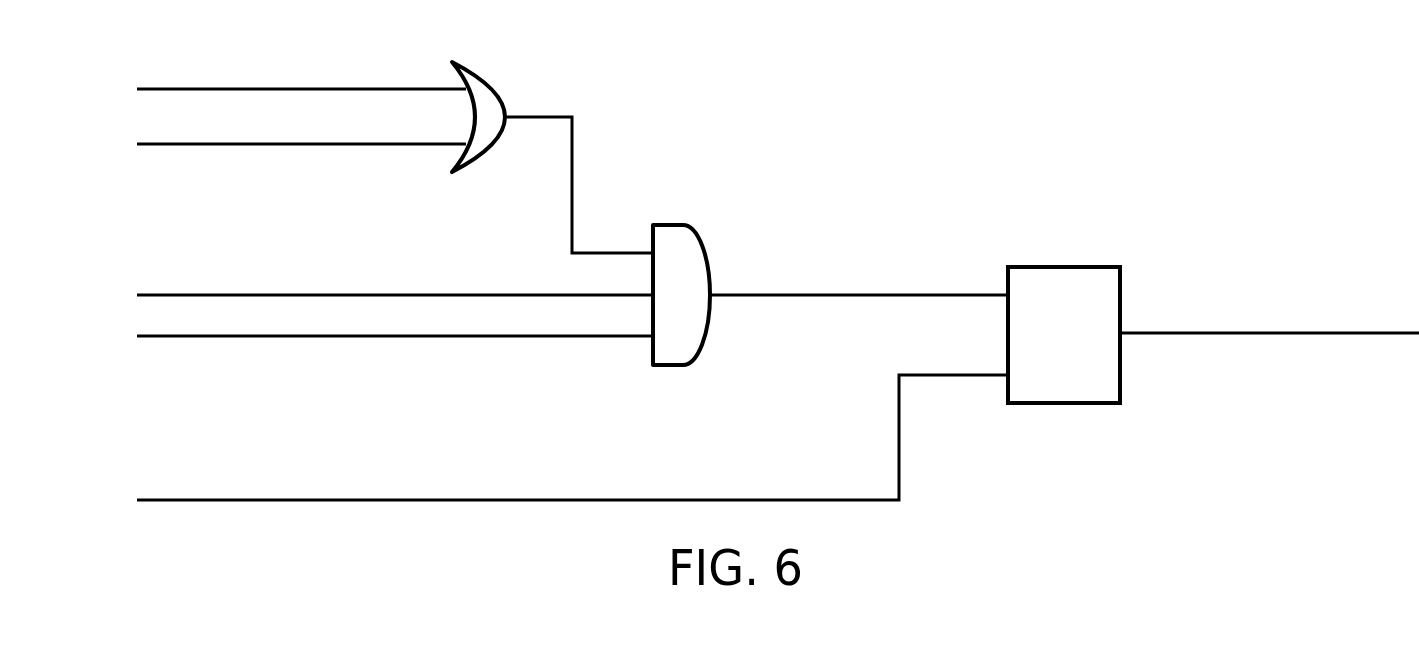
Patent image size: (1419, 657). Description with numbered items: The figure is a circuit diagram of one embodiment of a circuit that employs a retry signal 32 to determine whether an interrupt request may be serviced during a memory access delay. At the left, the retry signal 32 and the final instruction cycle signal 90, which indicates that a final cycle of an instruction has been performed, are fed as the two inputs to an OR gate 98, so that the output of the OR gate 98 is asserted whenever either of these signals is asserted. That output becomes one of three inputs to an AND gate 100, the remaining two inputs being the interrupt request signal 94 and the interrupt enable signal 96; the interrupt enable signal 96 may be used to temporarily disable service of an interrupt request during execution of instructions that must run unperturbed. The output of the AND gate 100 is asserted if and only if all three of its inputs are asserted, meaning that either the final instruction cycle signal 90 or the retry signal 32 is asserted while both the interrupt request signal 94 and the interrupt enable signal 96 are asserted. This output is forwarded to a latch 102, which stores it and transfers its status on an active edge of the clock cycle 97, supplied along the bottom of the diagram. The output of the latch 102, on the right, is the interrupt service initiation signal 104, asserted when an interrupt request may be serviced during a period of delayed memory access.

The final instruction cycle signal 90 is at (132, 62).
The retry signal 32 is at (132, 113).
The OR gate 98 is at (484, 74).
The interrupt request signal 94 is at (132, 269).
The interrupt enable signal 96 is at (132, 319).
The AND gate 100 is at (693, 229).
The clock cycle 97 is at (132, 471).
The latch 102 is at (1062, 266).
The interrupt service initiation signal 104 is at (1268, 336).